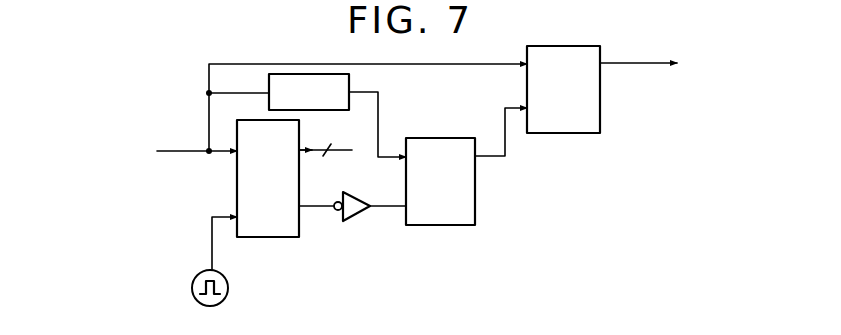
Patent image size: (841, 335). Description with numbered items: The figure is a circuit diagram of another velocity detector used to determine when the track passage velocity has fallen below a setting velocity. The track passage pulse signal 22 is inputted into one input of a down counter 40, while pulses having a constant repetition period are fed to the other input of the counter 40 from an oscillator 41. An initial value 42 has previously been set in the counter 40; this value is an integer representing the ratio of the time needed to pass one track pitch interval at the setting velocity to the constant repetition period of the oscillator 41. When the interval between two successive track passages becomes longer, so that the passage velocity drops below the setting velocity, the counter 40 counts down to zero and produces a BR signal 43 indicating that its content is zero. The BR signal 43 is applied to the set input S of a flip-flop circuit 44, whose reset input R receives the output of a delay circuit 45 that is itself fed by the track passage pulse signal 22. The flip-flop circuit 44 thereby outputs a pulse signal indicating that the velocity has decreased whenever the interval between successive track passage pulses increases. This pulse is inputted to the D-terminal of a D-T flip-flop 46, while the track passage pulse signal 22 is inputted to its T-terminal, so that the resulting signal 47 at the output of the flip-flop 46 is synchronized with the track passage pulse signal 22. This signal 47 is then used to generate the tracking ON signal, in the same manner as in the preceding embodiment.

The track passage pulse signal 22 is at (175, 149).
The down counter 40 is at (292, 237).
The oscillator 41 is at (228, 286).
The initial value 42 is at (343, 149).
The BR signal 43 is at (387, 208).
The flip-flop circuit 44 is at (452, 138).
The delay circuit 45 is at (349, 78).
The D-T flip-flop 46 is at (600, 131).
The output signal 47 is at (640, 62).